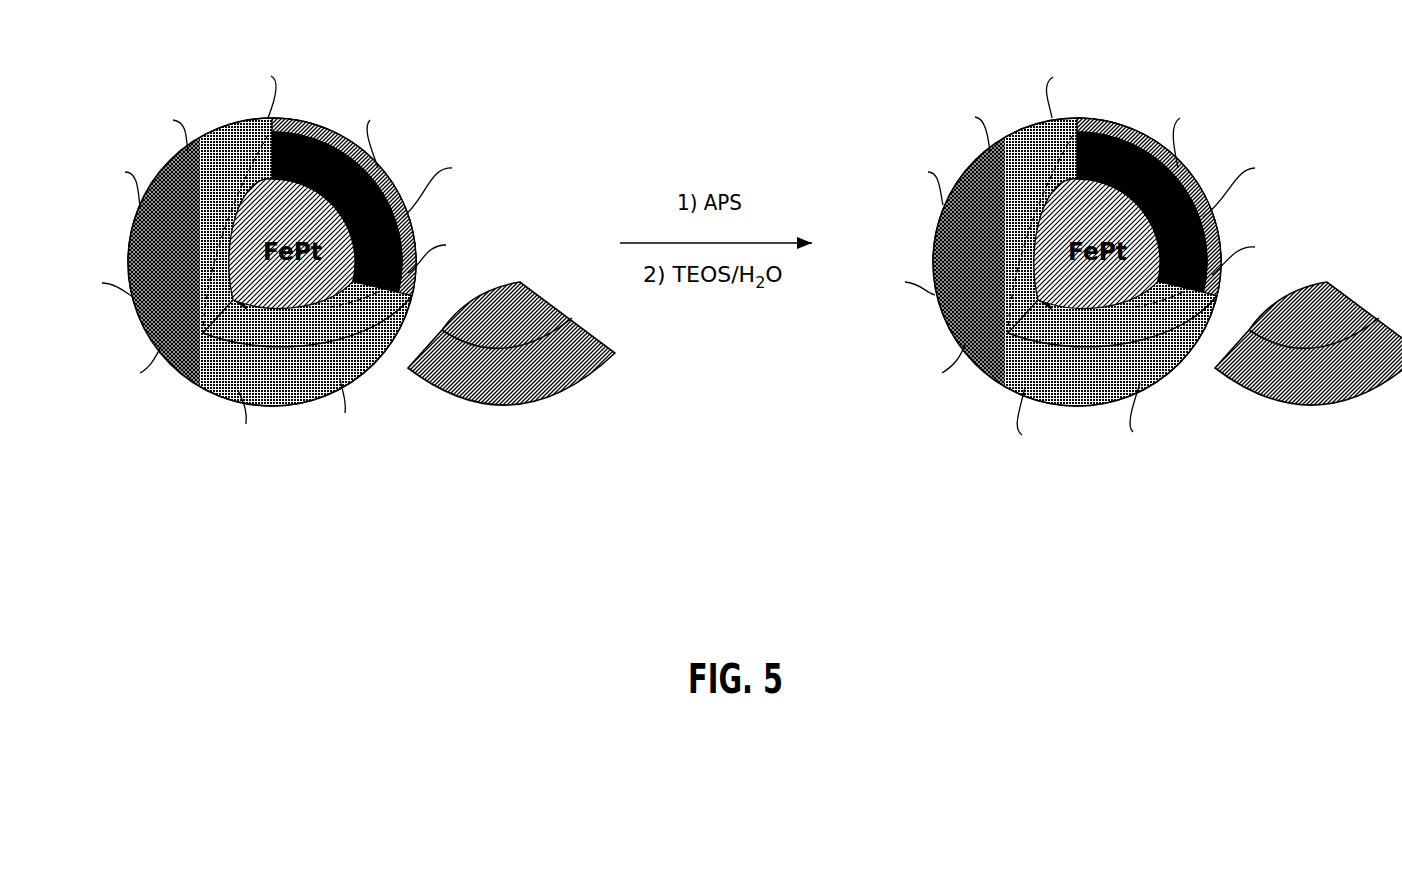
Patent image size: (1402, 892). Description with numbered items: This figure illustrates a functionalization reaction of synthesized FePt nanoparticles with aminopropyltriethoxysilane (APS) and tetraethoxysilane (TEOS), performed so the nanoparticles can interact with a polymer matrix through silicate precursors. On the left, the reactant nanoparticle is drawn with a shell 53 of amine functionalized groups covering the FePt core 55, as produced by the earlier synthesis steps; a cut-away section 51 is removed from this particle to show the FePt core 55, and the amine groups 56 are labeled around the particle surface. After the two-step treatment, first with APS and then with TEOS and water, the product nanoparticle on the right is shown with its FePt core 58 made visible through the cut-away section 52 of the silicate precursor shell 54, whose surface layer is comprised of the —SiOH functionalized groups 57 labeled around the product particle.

The cut-away section 51 is at (507, 387).
The cut-away section 52 is at (1308, 387).
The shell of amine functionalized groups 53 is at (213, 147).
The silicate precursor shell 54 is at (1013, 143).
The FePt core 55 is at (308, 140).
The amine groups (NH2) 56 is at (505, 155).
The SiOH functionalized groups 57 is at (917, 90).
The FePt core 58 is at (1123, 143).